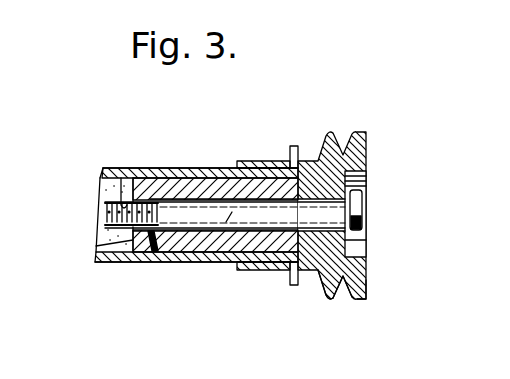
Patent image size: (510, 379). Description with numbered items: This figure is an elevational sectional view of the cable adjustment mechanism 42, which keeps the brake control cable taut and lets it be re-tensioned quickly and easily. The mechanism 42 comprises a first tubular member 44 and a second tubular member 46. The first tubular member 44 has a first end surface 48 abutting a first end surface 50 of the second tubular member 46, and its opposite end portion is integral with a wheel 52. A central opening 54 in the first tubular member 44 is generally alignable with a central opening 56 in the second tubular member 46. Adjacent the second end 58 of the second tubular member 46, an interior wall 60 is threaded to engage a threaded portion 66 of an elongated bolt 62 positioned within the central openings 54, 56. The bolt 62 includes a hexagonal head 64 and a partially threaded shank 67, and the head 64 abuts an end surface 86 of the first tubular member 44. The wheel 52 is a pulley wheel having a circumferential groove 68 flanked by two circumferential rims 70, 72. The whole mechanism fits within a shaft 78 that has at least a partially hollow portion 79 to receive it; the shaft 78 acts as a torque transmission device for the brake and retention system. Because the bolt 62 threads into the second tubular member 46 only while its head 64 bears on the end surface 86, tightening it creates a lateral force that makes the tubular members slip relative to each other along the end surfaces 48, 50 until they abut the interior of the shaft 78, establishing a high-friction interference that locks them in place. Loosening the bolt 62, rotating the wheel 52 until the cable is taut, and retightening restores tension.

The cable adjustment mechanism 42 is at (316, 122).
The first tubular member 44 is at (280, 271).
The second tubular member 46 is at (156, 247).
The first end surface 48 is at (238, 166).
The first end surface 50 is at (204, 243).
The wheel 52 is at (365, 152).
The central opening 54 is at (272, 198).
The central opening 56 is at (207, 178).
The second end 58 is at (96, 246).
The interior wall 60 is at (121, 180).
The elongated bolt 62 is at (358, 231).
The hexagonal head 64 is at (325, 222).
The threaded portion 66 is at (104, 219).
The partially threaded shank 67 is at (237, 218).
The circumferential groove 68 is at (345, 281).
The circumferential rim 70 is at (331, 299).
The circumferential rim 72 is at (367, 298).
The shaft 78 is at (163, 169).
The hollow portion 79 is at (100, 192).
The end surface 86 is at (367, 180).